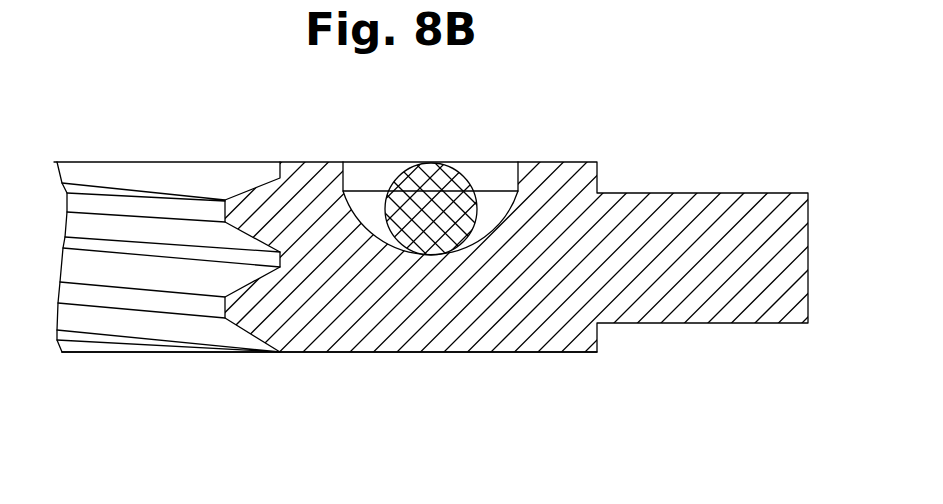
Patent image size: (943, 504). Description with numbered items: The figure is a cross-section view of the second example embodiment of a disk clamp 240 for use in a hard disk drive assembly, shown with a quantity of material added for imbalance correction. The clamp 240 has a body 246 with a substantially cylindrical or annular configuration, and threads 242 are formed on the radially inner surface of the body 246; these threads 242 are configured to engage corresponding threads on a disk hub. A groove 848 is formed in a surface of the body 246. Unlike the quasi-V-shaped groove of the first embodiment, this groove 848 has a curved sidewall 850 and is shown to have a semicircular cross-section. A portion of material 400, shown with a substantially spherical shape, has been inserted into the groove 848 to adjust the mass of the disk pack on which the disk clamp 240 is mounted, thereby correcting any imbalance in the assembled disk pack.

The disk clamp 240 is at (253, 388).
The threads 242 is at (207, 208).
The body 246 is at (562, 170).
The portion of material 400 is at (430, 193).
The groove 848 is at (493, 178).
The curved sidewall 850 is at (424, 254).